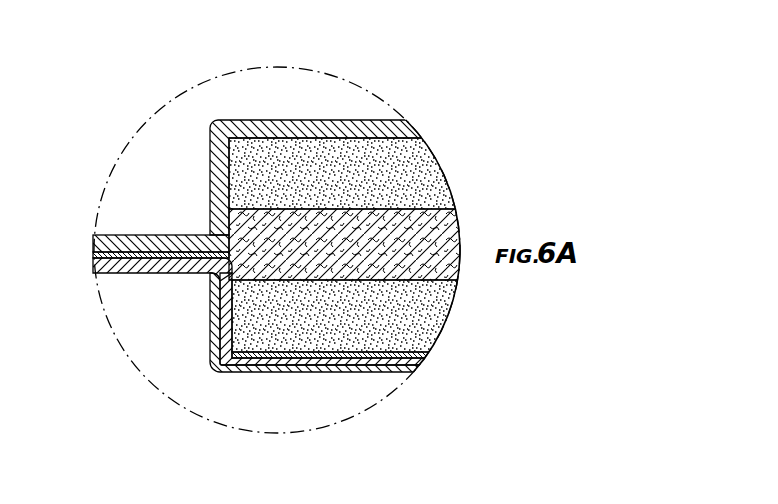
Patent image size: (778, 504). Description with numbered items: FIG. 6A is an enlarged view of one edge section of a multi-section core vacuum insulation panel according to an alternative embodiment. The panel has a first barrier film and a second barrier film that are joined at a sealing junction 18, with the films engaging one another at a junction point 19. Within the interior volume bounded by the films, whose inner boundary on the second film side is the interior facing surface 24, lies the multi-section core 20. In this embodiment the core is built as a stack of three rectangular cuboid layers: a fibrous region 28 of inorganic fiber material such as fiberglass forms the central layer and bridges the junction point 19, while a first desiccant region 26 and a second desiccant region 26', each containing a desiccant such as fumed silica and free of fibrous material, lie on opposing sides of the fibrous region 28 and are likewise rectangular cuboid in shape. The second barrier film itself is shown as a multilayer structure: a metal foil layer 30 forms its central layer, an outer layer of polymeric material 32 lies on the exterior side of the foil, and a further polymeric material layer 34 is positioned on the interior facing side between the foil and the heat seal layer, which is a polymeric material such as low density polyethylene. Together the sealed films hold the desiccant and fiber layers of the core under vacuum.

The sealing junction 18 is at (130, 237).
The junction point 19 is at (205, 265).
The multi-section core 20 is at (288, 160).
The interior facing surface of the second barrier film 24 is at (290, 322).
The desiccant region 26 is at (340, 141).
The desiccant region 26' is at (351, 381).
The fibrous region 28 is at (380, 228).
The metal foil layer 30 is at (351, 360).
The polymeric material layer 32 is at (247, 372).
The polymeric material layer 34 is at (433, 342).